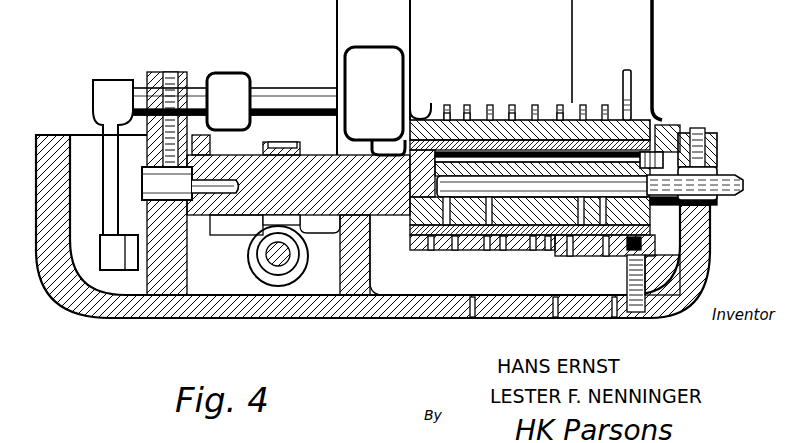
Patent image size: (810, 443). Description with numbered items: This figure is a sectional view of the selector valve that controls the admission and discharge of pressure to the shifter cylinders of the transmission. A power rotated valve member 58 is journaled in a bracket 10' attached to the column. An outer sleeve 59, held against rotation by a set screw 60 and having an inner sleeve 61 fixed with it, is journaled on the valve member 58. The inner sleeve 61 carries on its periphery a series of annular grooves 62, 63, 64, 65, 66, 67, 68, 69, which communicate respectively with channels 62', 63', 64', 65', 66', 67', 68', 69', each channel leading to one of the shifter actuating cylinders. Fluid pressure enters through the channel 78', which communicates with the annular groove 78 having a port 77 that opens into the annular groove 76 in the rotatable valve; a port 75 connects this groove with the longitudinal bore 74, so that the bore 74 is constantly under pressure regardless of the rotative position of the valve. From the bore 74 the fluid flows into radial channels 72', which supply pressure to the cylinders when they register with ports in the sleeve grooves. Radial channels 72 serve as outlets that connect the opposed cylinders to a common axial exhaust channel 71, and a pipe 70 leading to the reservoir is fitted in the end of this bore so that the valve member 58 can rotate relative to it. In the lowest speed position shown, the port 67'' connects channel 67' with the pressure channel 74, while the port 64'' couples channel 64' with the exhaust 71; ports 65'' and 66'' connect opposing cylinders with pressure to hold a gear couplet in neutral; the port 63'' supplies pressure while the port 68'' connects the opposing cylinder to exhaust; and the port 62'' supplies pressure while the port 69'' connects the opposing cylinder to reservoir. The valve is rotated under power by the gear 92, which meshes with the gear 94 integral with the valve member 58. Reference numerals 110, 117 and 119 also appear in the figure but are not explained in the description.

The bracket 10' is at (373, 177).
The valve member 58 is at (372, 198).
The outer sleeve 59 is at (705, 240).
The set screw 60 is at (682, 288).
The inner sleeve 61 is at (700, 232).
The annular groove 62 is at (412, 259).
The channel 62' is at (476, 92).
The port 62'' is at (474, 102).
The annular groove 63 is at (439, 266).
The channel 63' is at (488, 83).
The port 63'' is at (499, 102).
The annular groove 64 is at (473, 258).
The channel 64' is at (513, 92).
The port 64'' is at (486, 320).
The annular groove 65 is at (488, 266).
The channel 65' is at (533, 104).
The port 65'' is at (538, 96).
The annular groove 66 is at (523, 258).
The channel 66' is at (567, 84).
The port 66'' is at (581, 92).
The annular groove 67 is at (536, 266).
The channel 67' is at (582, 101).
The port 67'' is at (594, 106).
The annular groove 68 is at (567, 258).
The channel 68' is at (629, 105).
The port 68'' is at (573, 320).
The annular groove 69 is at (593, 266).
The channel 69' is at (633, 85).
The port 69'' is at (635, 320).
The pipe 70 is at (742, 182).
The exhaust channel 71 is at (438, 189).
The radial channels 72 is at (532, 226).
The radial channels 72' is at (530, 114).
The longitudinal bore 74 is at (437, 165).
The port 75 is at (655, 150).
The annular groove 76 is at (690, 210).
The port 77 is at (662, 145).
The annular groove 78 is at (693, 105).
The channel 78' is at (692, 118).
The gear 92 is at (290, 288).
The gear 94 is at (240, 155).
The housing part 110 is at (436, 4).
The housing part 117 is at (498, 4).
The housing part 119 is at (301, 4).